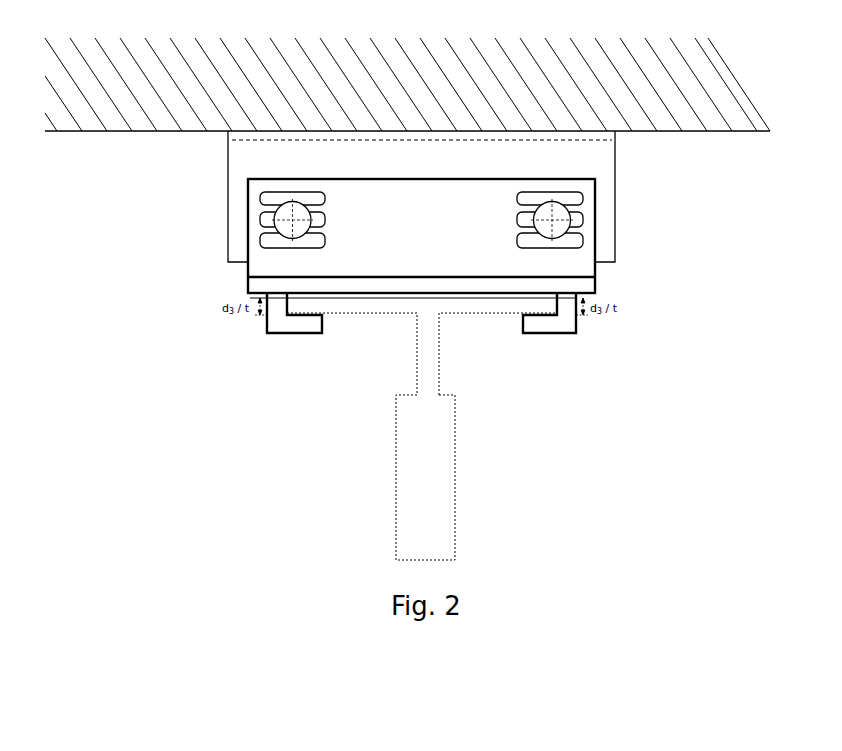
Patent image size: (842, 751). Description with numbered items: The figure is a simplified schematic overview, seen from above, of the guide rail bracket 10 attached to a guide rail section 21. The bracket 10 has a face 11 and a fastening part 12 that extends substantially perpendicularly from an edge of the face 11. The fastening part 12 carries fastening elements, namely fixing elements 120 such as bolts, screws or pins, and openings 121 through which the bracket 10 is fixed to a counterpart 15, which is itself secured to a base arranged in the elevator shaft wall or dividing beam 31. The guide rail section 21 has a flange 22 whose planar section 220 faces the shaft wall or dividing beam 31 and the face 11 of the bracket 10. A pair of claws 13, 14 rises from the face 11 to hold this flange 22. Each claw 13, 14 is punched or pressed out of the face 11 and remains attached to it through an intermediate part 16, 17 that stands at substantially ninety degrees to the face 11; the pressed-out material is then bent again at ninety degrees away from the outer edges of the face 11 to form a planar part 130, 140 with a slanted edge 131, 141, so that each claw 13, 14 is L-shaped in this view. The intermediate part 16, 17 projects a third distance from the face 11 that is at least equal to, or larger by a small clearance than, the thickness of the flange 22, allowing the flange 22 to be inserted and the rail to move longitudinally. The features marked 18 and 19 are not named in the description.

The elevator shaft wall or dividing beam 31 is at (416, 103).
The counterpart 15 is at (240, 158).
The fastening part 12 is at (583, 267).
The face 11 is at (415, 288).
The planar section of the flange 220 is at (400, 299).
The opening 121 is at (249, 209).
The fixing element 120 is at (271, 226).
The claw 14 is at (292, 325).
The intermediate part 17 is at (274, 313).
The outer bottom edge of left leg 19 is at (271, 333).
The planar part 140 is at (310, 335).
The slanted edge 141 is at (322, 335).
The claw 13 is at (553, 328).
The intermediate part 16 is at (568, 312).
The outer bottom edge of right leg 18 is at (578, 335).
The slanted edge 131 is at (523, 335).
The planar part 130 is at (540, 335).
The flange 22 is at (457, 315).
The guide rail section 21 is at (435, 448).
The guide rail bracket 10 is at (168, 338).